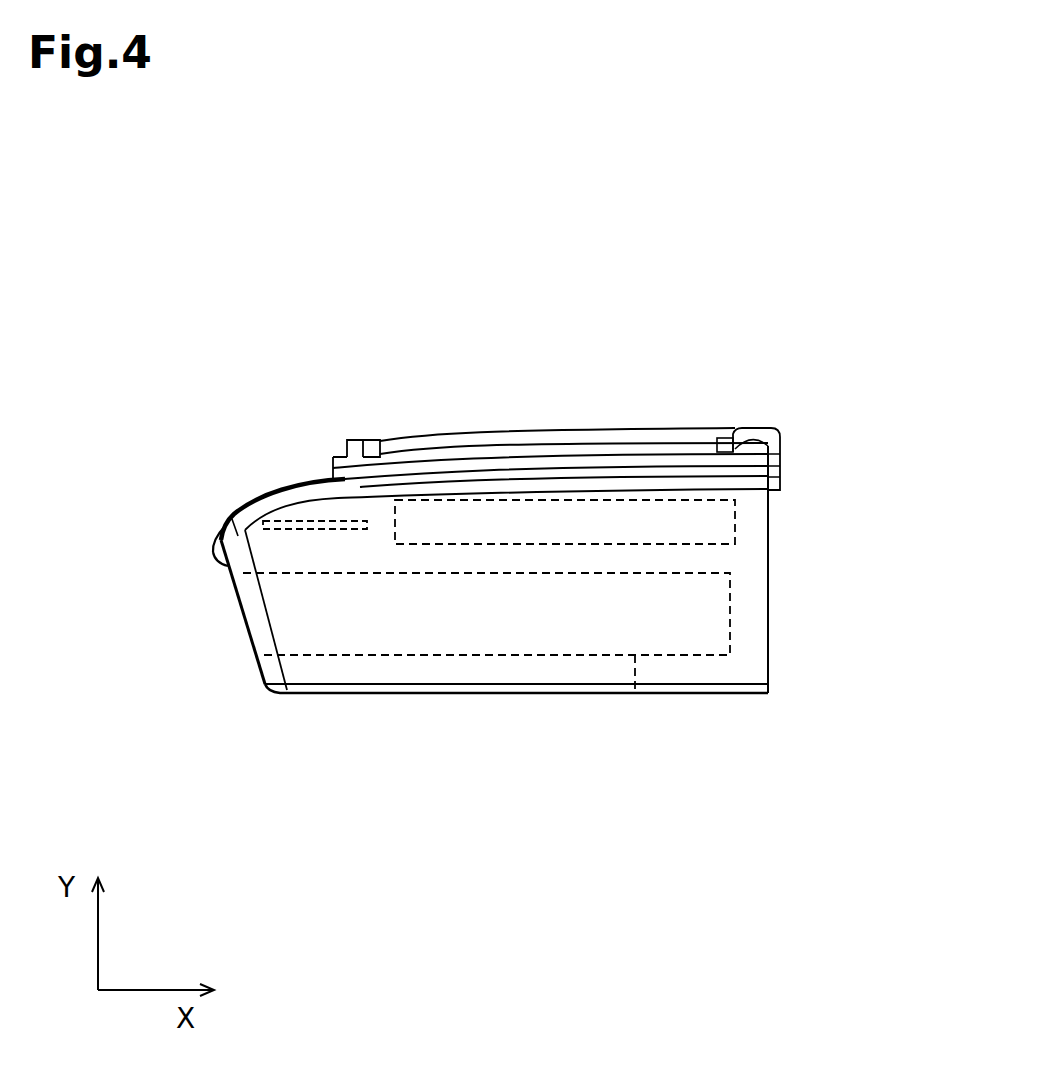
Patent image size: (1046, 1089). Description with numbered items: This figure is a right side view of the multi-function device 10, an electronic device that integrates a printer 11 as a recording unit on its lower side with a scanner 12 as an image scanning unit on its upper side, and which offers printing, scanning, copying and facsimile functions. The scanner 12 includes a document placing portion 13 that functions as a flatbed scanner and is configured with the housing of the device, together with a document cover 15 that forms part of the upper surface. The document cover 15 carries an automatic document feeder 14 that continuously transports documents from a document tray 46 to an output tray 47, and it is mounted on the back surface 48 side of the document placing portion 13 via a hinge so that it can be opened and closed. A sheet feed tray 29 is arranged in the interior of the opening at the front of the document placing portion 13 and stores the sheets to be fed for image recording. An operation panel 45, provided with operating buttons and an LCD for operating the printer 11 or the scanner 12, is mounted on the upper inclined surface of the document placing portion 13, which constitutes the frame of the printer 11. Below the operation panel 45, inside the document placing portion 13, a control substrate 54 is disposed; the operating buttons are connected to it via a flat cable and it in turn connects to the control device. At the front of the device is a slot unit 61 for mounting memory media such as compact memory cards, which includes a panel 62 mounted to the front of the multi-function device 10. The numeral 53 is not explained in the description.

The multi-function device 10 is at (655, 320).
The printer 11 is at (298, 627).
The scanner 12 is at (722, 527).
The document placing portion 13 is at (470, 483).
The automatic document feeder 14 is at (543, 428).
The document cover 15 is at (782, 436).
The sheet feed tray 29 is at (487, 668).
The operation panel 45 is at (260, 490).
The document tray 46 is at (390, 438).
The output tray 47 is at (622, 443).
The back surface 48 is at (774, 574).
The protrusion 53 is at (363, 437).
The control substrate 54 is at (300, 530).
The slot unit 61 is at (207, 532).
The panel 62 is at (224, 563).